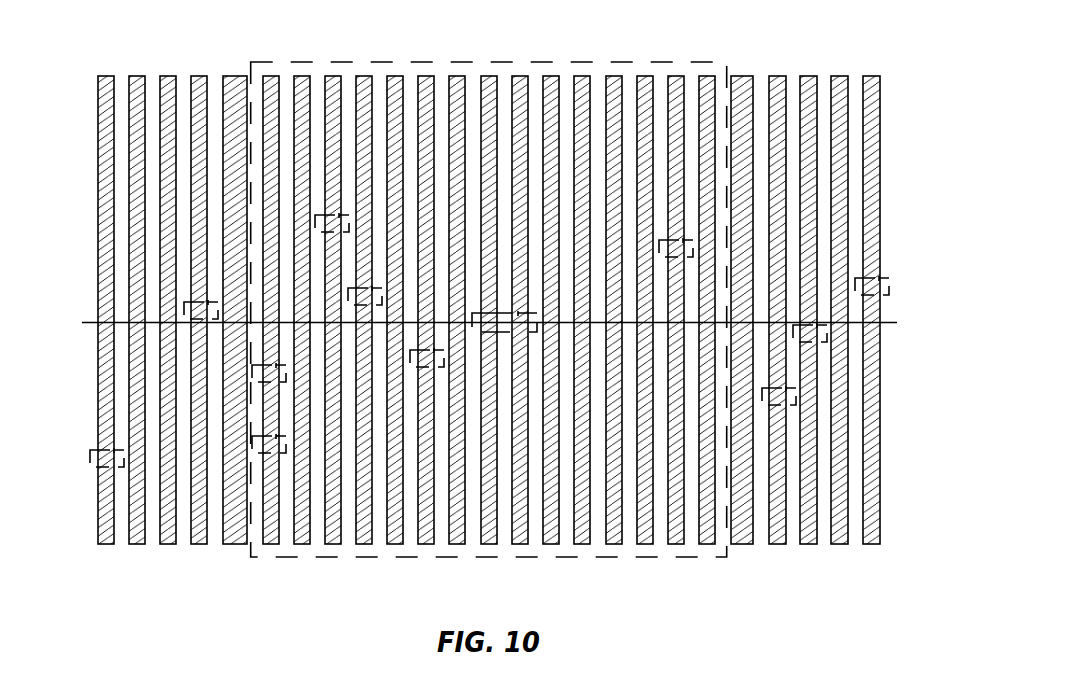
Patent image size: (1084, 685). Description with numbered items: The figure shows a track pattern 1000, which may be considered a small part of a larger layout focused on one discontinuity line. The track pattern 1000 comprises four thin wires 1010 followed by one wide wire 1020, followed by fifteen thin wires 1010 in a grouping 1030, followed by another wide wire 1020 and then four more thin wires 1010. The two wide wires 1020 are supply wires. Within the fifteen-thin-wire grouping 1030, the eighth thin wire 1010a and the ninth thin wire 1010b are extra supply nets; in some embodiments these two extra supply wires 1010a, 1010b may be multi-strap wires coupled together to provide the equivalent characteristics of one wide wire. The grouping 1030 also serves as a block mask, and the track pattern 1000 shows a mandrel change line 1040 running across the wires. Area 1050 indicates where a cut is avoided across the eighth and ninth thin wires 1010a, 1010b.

The track pattern 1000 is at (853, 44).
The thin wires 1010 is at (489, 313).
The eighth thin wire 1010a is at (488, 76).
The ninth thin wire 1010b is at (518, 76).
The wide wire 1020 is at (238, 546).
The block mask 1030 is at (598, 557).
The mandrel change line 1040 is at (891, 326).
The area where a cut is avoided 1050 is at (510, 333).